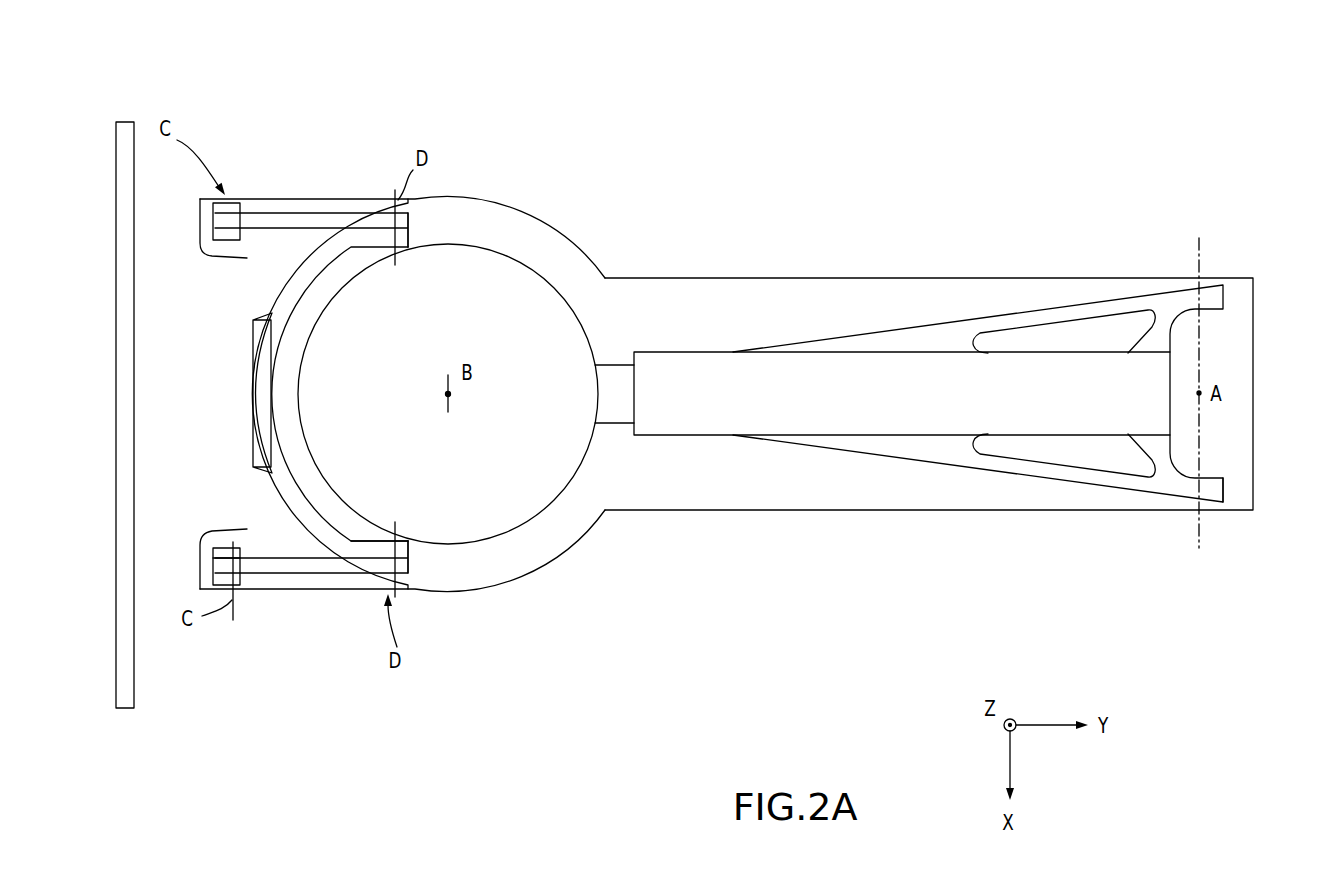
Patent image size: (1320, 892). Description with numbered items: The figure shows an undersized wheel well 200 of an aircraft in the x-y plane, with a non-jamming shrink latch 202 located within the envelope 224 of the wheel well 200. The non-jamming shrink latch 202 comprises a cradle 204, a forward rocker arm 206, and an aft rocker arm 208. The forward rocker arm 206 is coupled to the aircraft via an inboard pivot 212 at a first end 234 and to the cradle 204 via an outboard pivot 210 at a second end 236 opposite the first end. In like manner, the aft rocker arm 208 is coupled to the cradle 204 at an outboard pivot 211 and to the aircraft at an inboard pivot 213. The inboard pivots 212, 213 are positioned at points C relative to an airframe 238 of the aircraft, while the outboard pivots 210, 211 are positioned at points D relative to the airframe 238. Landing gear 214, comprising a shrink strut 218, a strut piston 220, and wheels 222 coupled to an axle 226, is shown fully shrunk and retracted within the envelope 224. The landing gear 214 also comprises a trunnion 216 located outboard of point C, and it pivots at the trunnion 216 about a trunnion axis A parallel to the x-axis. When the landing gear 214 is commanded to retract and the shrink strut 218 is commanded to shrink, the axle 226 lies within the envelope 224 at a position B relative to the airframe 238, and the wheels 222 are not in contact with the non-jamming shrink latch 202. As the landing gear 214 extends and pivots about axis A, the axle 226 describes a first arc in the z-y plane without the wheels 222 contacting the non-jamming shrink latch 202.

The wheel well 200 is at (1165, 80).
The non-jamming shrink latch 202 is at (222, 458).
The cradle 204 is at (258, 375).
The forward rocker arm 206 is at (335, 558).
The aft rocker arm 208 is at (313, 222).
The outboard pivot 210 is at (410, 567).
The outboard pivot 211 is at (410, 222).
The inboard pivot 212 is at (212, 552).
The inboard pivot 213 is at (233, 208).
The landing gear 214 is at (950, 318).
The trunnion 216 is at (1218, 487).
The shrink strut 218 is at (918, 405).
The strut piston 220 is at (615, 372).
The wheels 222 is at (545, 268).
The envelope 224 is at (775, 276).
The axle 226 is at (450, 396).
The first end 234 is at (237, 563).
The second end 236 is at (398, 562).
The airframe 238 is at (134, 636).